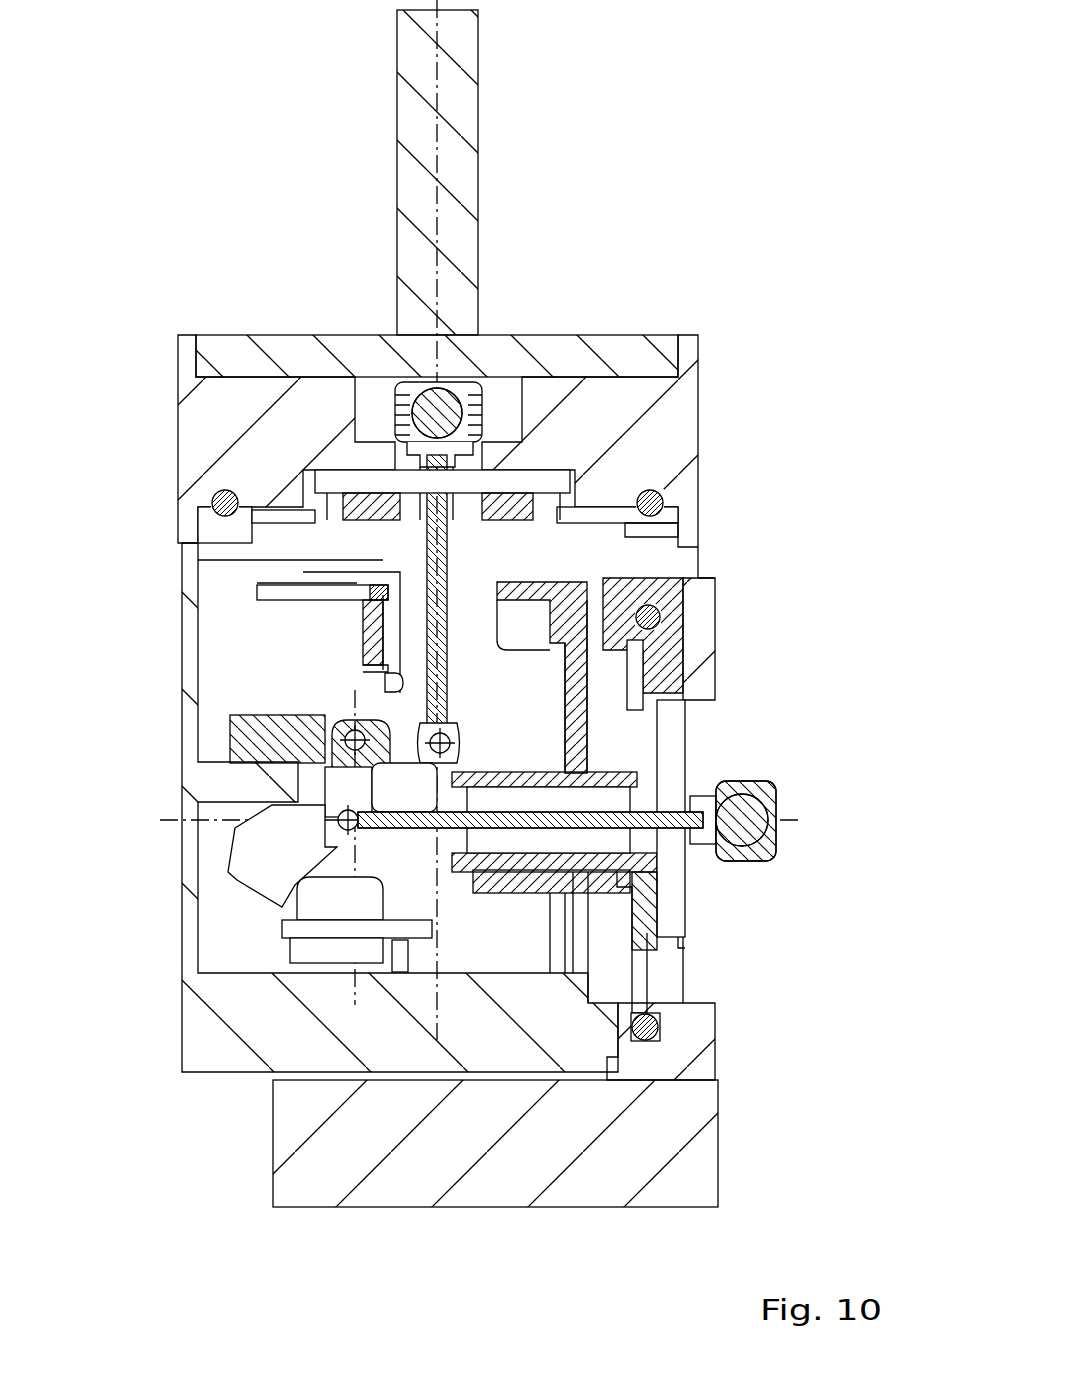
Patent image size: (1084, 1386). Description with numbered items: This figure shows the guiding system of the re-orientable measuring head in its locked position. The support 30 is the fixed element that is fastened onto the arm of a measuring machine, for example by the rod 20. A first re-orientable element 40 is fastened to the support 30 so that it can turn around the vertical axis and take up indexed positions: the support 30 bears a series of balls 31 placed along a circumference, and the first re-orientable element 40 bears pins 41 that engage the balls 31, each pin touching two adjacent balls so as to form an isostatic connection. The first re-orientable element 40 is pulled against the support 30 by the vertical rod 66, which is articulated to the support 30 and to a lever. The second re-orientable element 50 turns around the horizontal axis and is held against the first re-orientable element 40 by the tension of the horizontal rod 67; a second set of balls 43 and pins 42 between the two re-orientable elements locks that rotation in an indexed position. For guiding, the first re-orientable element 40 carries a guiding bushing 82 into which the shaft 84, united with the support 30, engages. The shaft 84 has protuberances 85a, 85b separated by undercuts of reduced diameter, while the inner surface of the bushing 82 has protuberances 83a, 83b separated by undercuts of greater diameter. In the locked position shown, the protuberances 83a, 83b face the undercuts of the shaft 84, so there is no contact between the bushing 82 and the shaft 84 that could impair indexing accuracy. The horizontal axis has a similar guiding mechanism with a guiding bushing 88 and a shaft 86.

The rod 20 is at (455, 83).
The support 30 is at (672, 427).
The balls 31 is at (663, 503).
The pins 41 is at (657, 527).
The first re-orientable element 40 is at (253, 1022).
The pins 42 is at (627, 635).
The balls 43 is at (657, 607).
The second re-orientable element 50 is at (333, 1177).
The vertical rod 66 is at (450, 678).
The horizontal rod 67 is at (650, 853).
The guiding bushing 82 is at (503, 627).
The protuberance 83a is at (415, 600).
The protuberance 83b is at (400, 670).
The shaft 84 is at (483, 550).
The protuberance 85a is at (373, 595).
The protuberance 85b is at (387, 688).
The shaft 86 is at (620, 779).
The guiding bushing 88 is at (600, 965).